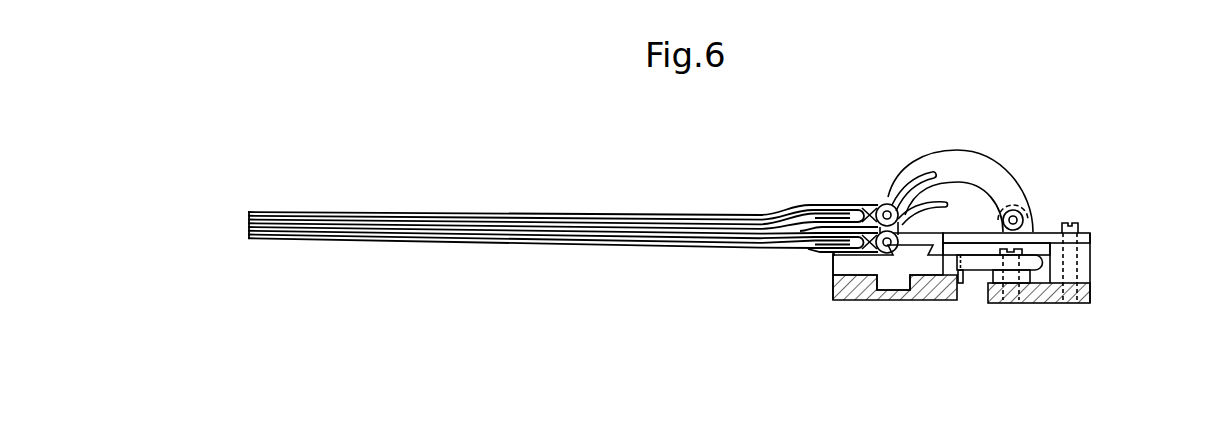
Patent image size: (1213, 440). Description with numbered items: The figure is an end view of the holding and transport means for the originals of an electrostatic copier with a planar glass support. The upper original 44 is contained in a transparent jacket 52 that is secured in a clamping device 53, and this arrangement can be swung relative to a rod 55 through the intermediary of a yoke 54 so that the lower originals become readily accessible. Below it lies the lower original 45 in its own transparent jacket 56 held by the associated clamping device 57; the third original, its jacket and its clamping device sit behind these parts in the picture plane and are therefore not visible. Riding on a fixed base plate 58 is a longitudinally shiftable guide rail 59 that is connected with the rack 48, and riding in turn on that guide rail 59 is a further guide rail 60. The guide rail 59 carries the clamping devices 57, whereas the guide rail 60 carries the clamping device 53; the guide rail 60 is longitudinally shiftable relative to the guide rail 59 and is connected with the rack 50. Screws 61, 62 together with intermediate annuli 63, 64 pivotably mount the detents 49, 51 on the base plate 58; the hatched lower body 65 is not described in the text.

The upper original 44 is at (298, 214).
The transparent jacket 52 is at (405, 219).
The lower original 45 is at (350, 233).
The transparent jacket 56 is at (443, 242).
The clamping device 53 is at (880, 205).
The yoke 54 is at (955, 154).
The rod 55 is at (1019, 214).
The rack 50 is at (955, 233).
The detent 51 is at (1040, 236).
The screw 62 is at (1083, 229).
The screw 61 is at (1087, 264).
The annulus 64 is at (1092, 285).
The base 65 is at (1088, 304).
The annulus 63 is at (1012, 290).
The detent 49 is at (993, 274).
The rack 48 is at (961, 270).
The guide rail 60 is at (915, 253).
The base plate 58 is at (857, 292).
The guide rail 59 is at (833, 280).
The clamping device 57 is at (828, 252).